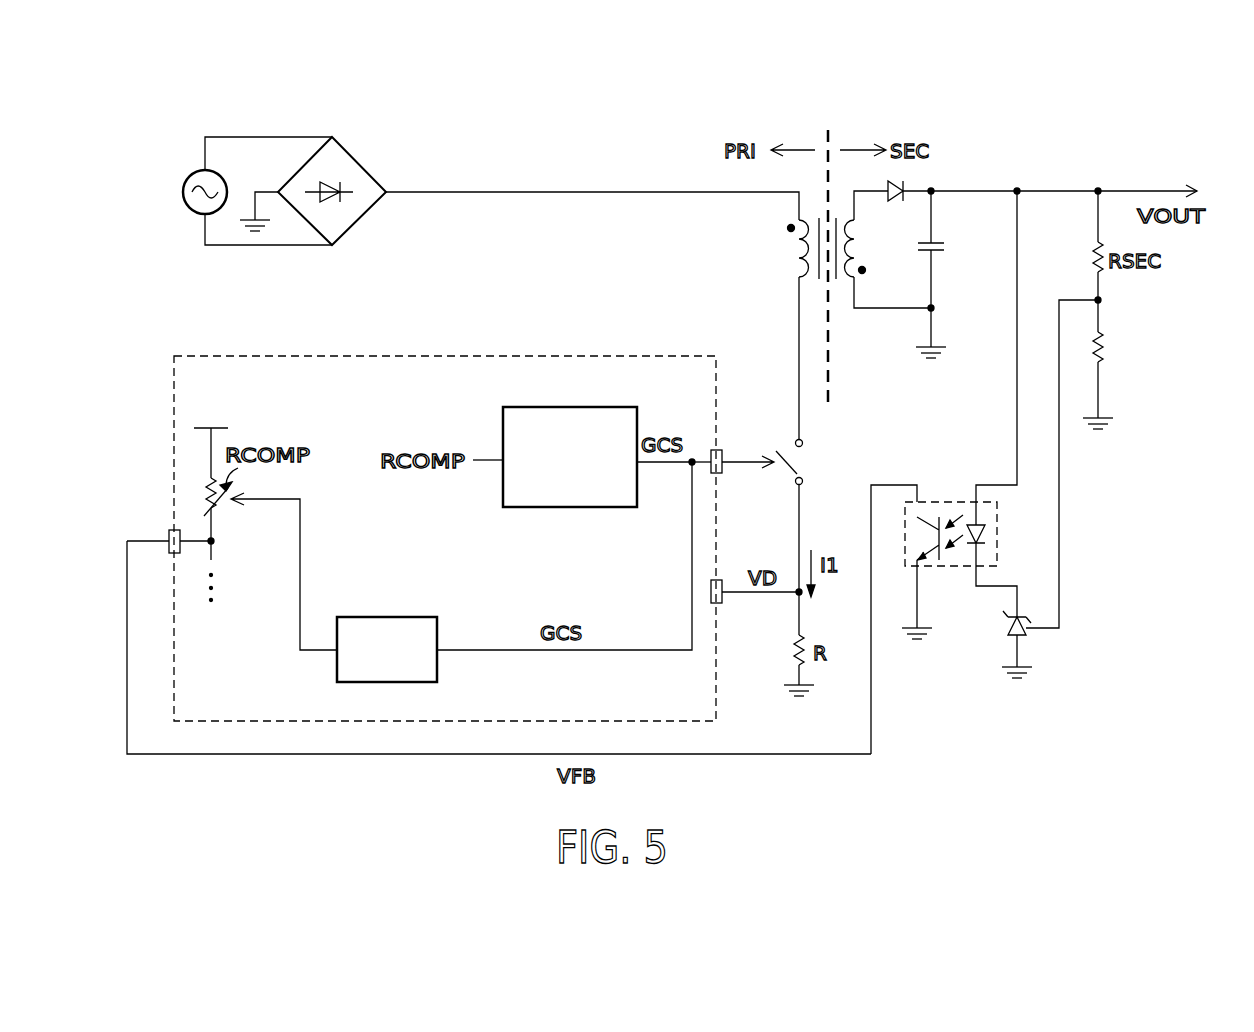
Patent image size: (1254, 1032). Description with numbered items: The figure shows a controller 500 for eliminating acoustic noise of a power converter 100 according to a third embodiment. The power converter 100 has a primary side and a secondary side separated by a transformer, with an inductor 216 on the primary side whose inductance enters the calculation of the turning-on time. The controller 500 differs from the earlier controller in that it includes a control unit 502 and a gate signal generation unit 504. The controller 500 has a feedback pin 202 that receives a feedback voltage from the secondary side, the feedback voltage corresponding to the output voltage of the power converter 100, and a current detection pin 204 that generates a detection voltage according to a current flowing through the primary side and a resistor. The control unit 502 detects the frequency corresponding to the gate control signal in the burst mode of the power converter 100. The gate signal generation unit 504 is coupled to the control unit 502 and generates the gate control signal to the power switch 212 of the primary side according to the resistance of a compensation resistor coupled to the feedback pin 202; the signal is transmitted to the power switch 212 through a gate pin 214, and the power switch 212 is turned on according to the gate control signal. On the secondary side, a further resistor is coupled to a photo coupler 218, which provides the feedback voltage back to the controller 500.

The power converter 100 is at (1135, 140).
The feedback pin 202 is at (168, 539).
The current detection pin 204 is at (724, 602).
The power switch 212 is at (805, 462).
The gate pin 214 is at (724, 459).
The inductor 216 is at (790, 242).
The photo coupler 218 is at (937, 502).
The controller 500 is at (492, 356).
The control unit 502 is at (363, 616).
The gate signal generation unit 504 is at (586, 407).